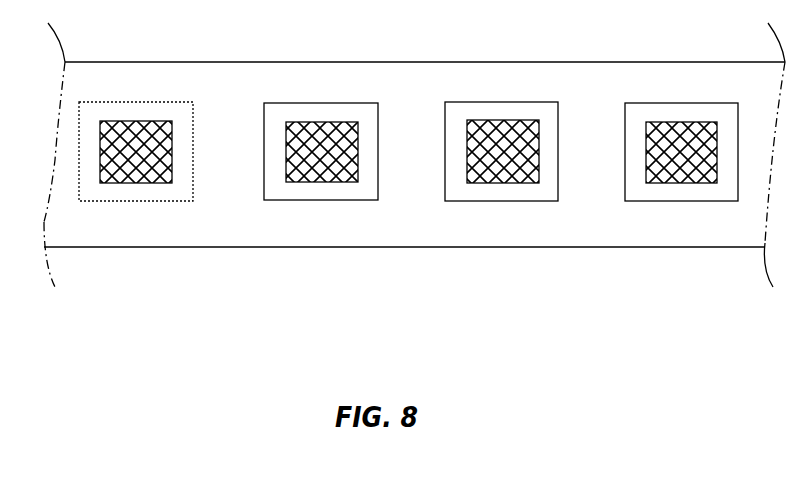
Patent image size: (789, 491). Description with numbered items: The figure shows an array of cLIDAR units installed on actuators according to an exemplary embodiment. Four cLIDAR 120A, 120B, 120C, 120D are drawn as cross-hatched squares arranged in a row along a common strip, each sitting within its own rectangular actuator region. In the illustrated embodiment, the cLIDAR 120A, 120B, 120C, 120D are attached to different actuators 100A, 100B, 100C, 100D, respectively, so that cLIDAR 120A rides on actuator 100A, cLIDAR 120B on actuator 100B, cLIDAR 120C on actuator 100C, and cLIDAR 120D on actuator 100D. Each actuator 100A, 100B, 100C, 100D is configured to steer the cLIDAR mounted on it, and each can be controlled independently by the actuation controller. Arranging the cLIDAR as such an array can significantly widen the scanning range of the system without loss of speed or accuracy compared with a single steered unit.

The actuator 100A is at (125, 201).
The actuator 100B is at (305, 200).
The actuator 100C is at (483, 201).
The actuator 100D is at (657, 201).
The cLIDAR 120A is at (163, 183).
The cLIDAR 120B is at (350, 182).
The cLIDAR 120C is at (528, 183).
The cLIDAR 120D is at (698, 183).